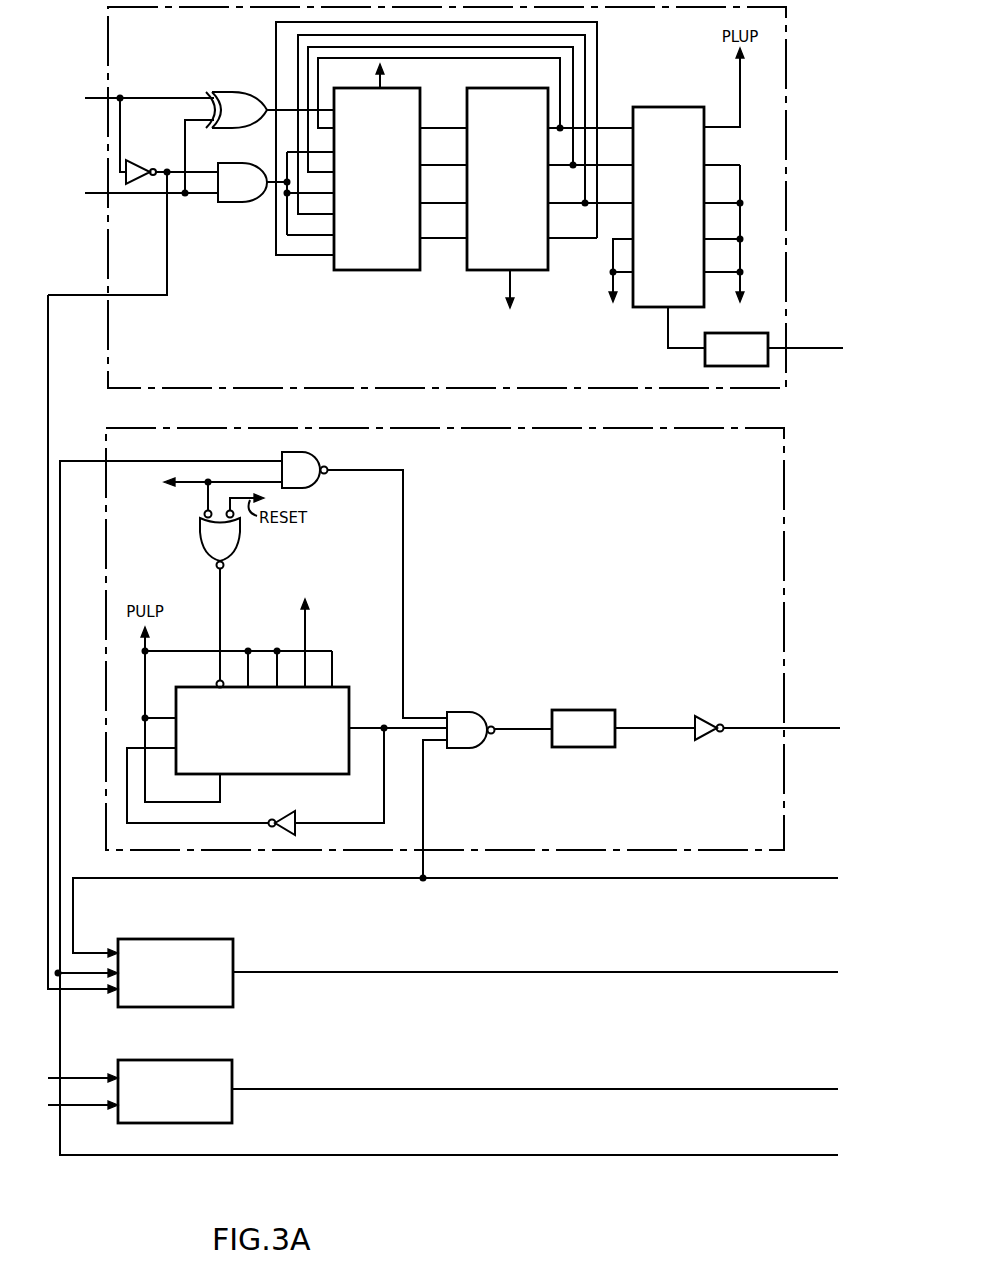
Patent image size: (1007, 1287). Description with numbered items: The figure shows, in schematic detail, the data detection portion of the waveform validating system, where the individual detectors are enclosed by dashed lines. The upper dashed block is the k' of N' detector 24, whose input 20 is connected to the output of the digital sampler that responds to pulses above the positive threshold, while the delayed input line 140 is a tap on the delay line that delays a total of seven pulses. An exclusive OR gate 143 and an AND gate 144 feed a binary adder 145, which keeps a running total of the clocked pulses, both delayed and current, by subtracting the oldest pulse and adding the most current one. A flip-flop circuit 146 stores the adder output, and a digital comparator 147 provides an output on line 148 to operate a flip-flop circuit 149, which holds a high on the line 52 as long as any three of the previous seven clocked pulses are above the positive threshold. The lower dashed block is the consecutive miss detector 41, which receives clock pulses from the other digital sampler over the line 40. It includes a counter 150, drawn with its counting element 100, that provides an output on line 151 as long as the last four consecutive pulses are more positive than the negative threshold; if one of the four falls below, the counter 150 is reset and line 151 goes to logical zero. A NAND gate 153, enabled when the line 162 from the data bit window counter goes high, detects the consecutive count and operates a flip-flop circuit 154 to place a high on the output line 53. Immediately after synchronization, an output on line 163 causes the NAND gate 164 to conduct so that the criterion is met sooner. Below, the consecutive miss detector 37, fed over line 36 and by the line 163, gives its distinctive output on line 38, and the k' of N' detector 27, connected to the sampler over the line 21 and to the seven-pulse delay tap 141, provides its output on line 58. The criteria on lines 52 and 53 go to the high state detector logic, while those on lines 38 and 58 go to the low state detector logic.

The input line 20 is at (88, 100).
The delayed input line 140 is at (93, 196).
The k' of N' detector 24 is at (786, 140).
The exclusive OR gate 143 is at (248, 90).
The AND gate 144 is at (256, 202).
The binary adder 145 is at (348, 270).
The flip-flop circuit 146 is at (530, 270).
The digital comparator 147 is at (657, 107).
The comparator output line 148 is at (661, 329).
The flip-flop circuit 149 is at (705, 358).
The output line 52 is at (808, 348).
The line 36 is at (48, 415).
The counter output line 163 is at (87, 460).
The NAND gate 164 is at (322, 452).
The line 40 is at (187, 485).
The consecutive miss detector 41 is at (784, 620).
The counter 150 is at (280, 730).
The counter 100 is at (255, 774).
The counter output line 151 is at (363, 727).
The NAND gate 153 is at (458, 712).
The flip-flop circuit 154 is at (580, 710).
The output line 53 is at (822, 728).
The enable line 162 is at (793, 878).
The consecutive miss detector 37 is at (197, 939).
The output line 38 is at (812, 972).
The k' of N' detector 27 is at (200, 1060).
The output line 58 is at (305, 1089).
The line 21 is at (88, 1077).
The delay line tap 141 is at (88, 1107).